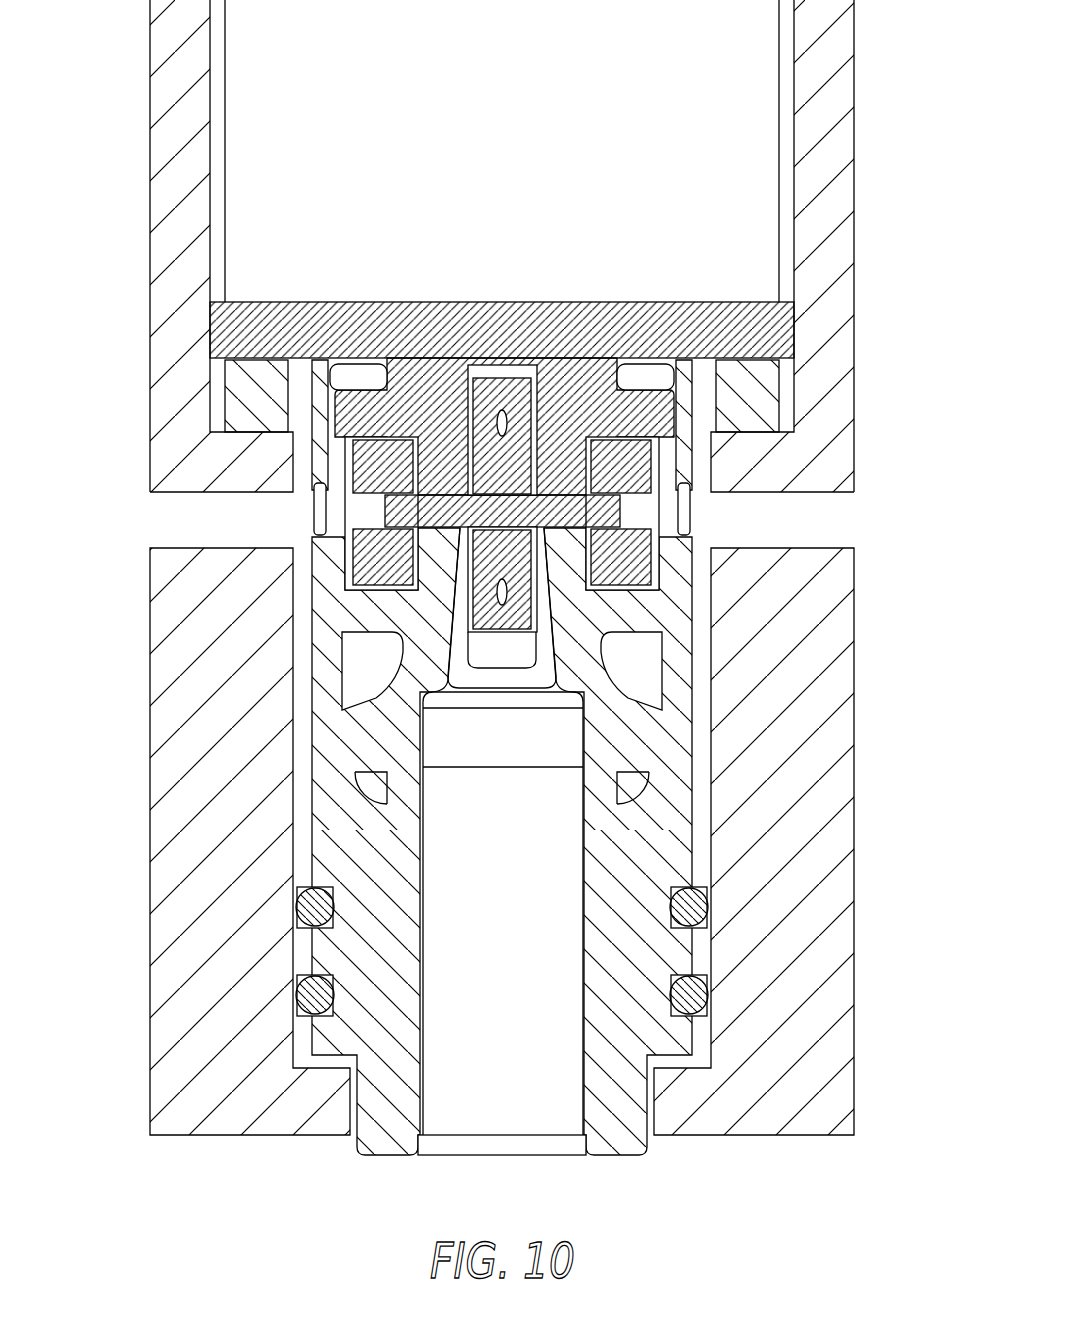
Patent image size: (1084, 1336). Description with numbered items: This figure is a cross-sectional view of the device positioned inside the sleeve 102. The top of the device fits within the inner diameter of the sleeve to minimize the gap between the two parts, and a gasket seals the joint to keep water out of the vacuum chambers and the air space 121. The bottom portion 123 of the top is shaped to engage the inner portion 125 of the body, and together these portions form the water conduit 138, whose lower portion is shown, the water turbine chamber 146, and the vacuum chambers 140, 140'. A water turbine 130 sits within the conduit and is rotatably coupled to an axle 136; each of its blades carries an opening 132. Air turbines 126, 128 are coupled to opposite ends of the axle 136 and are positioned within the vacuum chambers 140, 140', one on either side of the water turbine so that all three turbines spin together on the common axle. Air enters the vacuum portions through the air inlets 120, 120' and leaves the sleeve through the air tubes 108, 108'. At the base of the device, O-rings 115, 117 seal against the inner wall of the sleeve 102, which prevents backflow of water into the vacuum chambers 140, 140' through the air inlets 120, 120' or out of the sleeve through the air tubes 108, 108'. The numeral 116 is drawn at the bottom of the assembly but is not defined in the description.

The sleeve 102 is at (843, 27).
The air tube 108 is at (808, 826).
The air tube 108' is at (196, 825).
The O-ring 115 is at (317, 907).
The end plate 116 is at (537, 1143).
The O-ring 117 is at (307, 997).
The air inlet 120 is at (818, 504).
The air inlet 120' is at (184, 479).
The air space 121 is at (300, 572).
The bottom portion of the top 123 is at (400, 405).
The inner portion of the body 125 is at (405, 612).
The air turbine 126 is at (378, 465).
The air turbine 128 is at (637, 465).
The water turbine 130 is at (515, 400).
The opening 132 is at (503, 600).
The axle 136 is at (597, 513).
The water conduit 138 is at (545, 848).
The vacuum chamber 140 is at (770, 475).
The vacuum chamber 140' is at (235, 420).
The water turbine chamber 146 is at (487, 372).